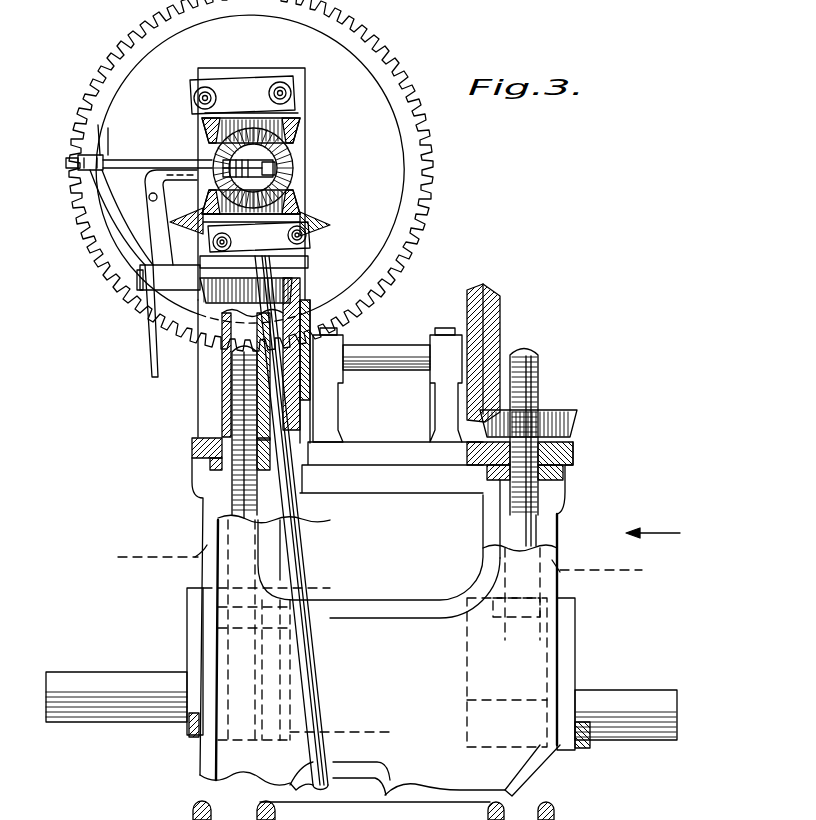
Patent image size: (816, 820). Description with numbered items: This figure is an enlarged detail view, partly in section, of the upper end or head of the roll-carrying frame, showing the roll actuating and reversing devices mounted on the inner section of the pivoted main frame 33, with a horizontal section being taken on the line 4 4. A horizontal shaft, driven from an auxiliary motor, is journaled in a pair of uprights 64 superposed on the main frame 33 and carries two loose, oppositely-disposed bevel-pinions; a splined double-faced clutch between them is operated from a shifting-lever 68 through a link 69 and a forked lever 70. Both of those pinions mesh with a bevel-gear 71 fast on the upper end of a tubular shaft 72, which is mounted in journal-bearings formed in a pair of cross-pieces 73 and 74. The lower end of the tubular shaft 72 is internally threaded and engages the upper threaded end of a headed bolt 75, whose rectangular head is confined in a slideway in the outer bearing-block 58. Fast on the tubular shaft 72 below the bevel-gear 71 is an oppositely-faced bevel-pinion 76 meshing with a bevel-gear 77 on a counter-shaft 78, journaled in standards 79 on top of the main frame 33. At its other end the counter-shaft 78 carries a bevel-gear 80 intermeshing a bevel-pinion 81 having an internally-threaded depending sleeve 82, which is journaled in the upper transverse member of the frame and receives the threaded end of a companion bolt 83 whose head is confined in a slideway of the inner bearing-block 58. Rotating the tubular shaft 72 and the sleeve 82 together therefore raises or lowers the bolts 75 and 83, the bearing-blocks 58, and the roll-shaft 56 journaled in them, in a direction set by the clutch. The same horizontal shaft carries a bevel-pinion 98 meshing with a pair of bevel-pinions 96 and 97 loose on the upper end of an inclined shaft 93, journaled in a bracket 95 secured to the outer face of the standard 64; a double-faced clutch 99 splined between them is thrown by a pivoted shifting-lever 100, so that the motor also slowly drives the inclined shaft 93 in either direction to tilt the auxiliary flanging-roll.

The section line 4 is at (378, 563).
The main frame 33 is at (200, 560).
The roll-shaft 56 is at (140, 685).
The bearing-blocks 58 is at (195, 640).
The uprights 64 is at (305, 116).
The shifting-lever 68 is at (150, 335).
The link 69 is at (78, 156).
The forked lever 70 is at (118, 164).
The bevel-gear 71 is at (318, 224).
The tubular shaft 72 is at (220, 386).
The cross-piece 73 is at (138, 268).
The cross-piece 74 is at (192, 448).
The headed bolt 75 is at (233, 504).
The bevel-pinion 76 is at (306, 271).
The bevel-gear 77 is at (345, 318).
The counter-shaft 78 is at (386, 370).
The standards 79 is at (442, 407).
The bevel-gear 80 is at (488, 298).
The bevel-pinion 81 is at (566, 431).
The sleeve 82 is at (560, 462).
The bolt 83 is at (523, 531).
The inclined shaft 93 is at (303, 552).
The bracket 95 is at (245, 77).
The bevel-pinion 96 is at (294, 137).
The bevel-pinion 97 is at (305, 204).
The bevel-pinion 98 is at (282, 160).
The double-faced clutch 99 is at (275, 166).
The shifting-lever 100 is at (160, 236).